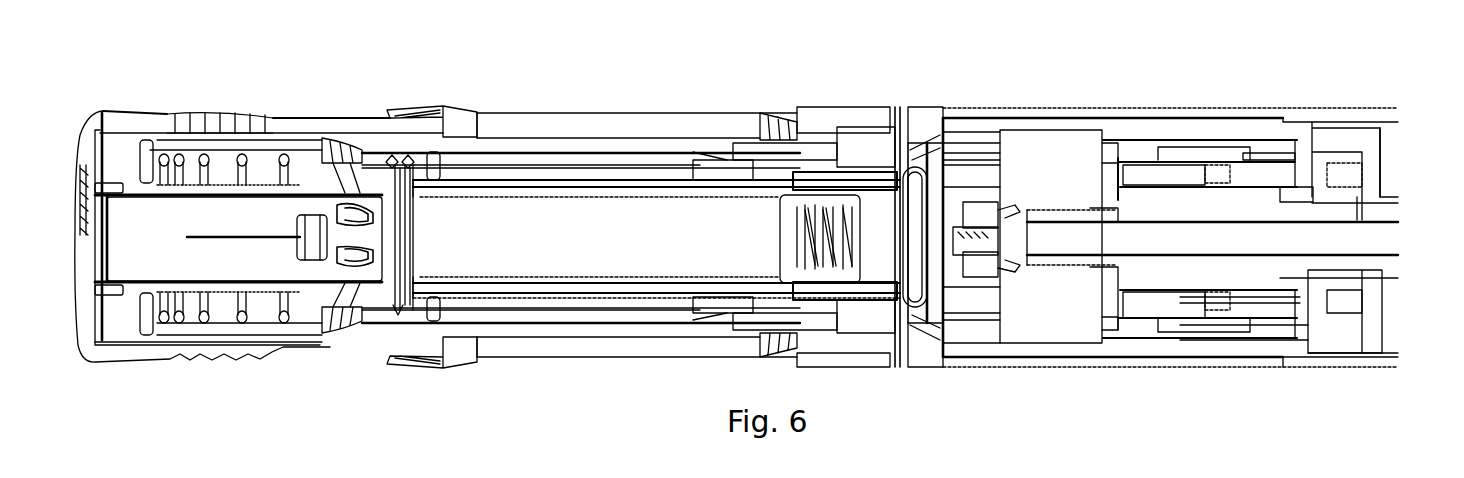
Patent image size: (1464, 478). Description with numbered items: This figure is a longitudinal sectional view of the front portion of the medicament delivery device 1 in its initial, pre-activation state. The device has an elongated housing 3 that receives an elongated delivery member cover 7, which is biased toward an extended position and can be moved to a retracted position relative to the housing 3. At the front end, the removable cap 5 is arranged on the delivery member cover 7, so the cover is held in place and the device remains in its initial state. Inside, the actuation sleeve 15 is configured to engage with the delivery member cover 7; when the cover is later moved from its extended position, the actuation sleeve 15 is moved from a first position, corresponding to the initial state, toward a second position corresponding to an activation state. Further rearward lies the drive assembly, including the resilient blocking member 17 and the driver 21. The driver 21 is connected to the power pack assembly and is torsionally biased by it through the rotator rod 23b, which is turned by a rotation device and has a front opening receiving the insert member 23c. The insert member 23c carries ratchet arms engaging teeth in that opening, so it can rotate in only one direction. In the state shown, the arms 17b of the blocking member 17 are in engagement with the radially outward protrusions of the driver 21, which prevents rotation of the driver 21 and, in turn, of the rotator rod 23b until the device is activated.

The medicament delivery device 1 is at (688, 41).
The housing 3 is at (875, 97).
The cap 5 is at (120, 110).
The delivery member cover 7 is at (285, 140).
The actuation sleeve 15 is at (1213, 153).
The blocking member 17 is at (1042, 147).
The arms 17b is at (1138, 172).
The driver 21 is at (1243, 200).
The rotator rod 23b is at (1372, 186).
The insert member 23c is at (1328, 183).